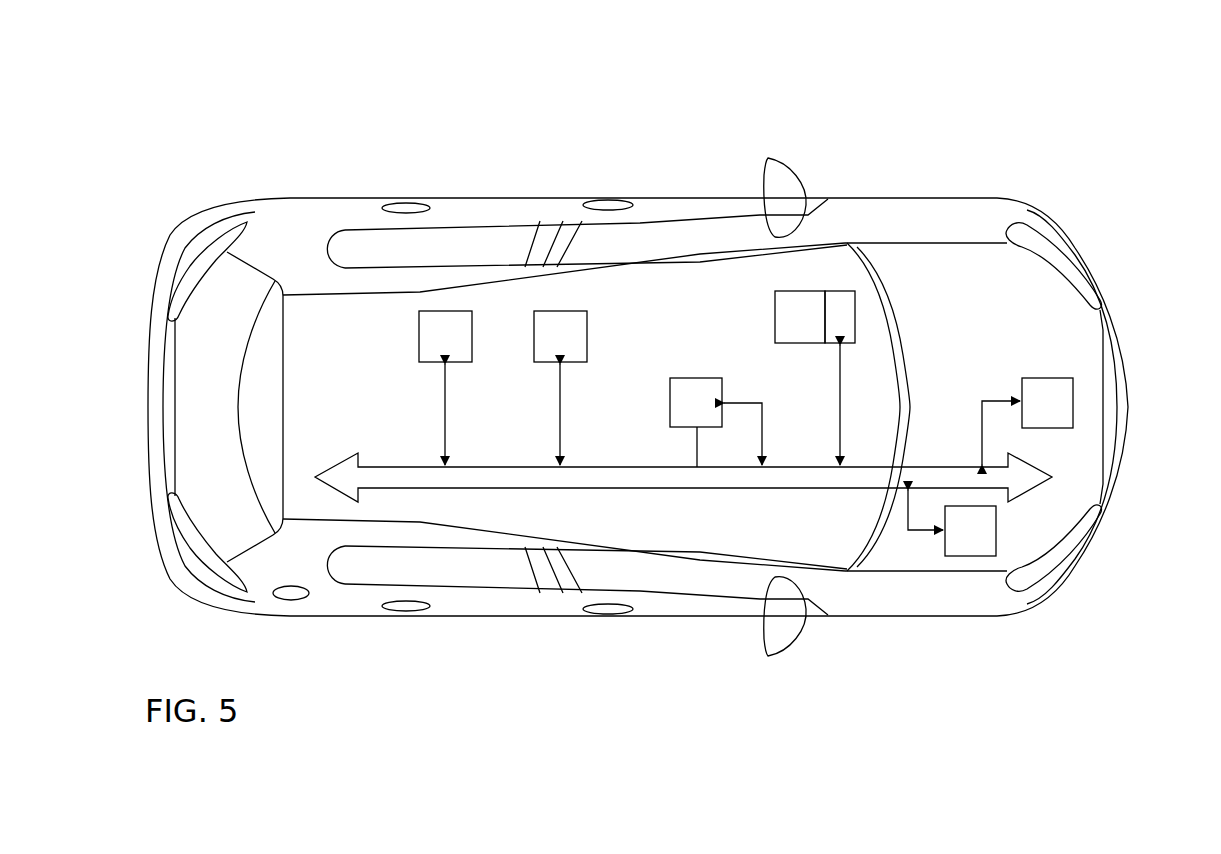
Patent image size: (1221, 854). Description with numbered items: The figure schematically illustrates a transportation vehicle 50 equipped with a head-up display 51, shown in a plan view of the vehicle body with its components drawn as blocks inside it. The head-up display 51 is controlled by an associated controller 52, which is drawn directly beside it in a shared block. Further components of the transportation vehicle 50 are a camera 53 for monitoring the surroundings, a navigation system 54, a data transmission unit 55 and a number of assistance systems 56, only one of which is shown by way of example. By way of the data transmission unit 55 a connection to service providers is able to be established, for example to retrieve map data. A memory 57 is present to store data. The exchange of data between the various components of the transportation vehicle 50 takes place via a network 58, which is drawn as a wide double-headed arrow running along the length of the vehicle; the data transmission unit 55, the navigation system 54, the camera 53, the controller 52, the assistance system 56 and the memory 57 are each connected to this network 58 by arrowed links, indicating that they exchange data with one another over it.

The transportation vehicle 50 is at (965, 199).
The head-up display 51 is at (798, 293).
The controller 52 is at (840, 293).
The camera 53 is at (690, 378).
The navigation system 54 is at (540, 312).
The data transmission unit 55 is at (425, 312).
The assistance system 56 is at (1047, 378).
The memory 57 is at (972, 555).
The network 58 is at (478, 485).